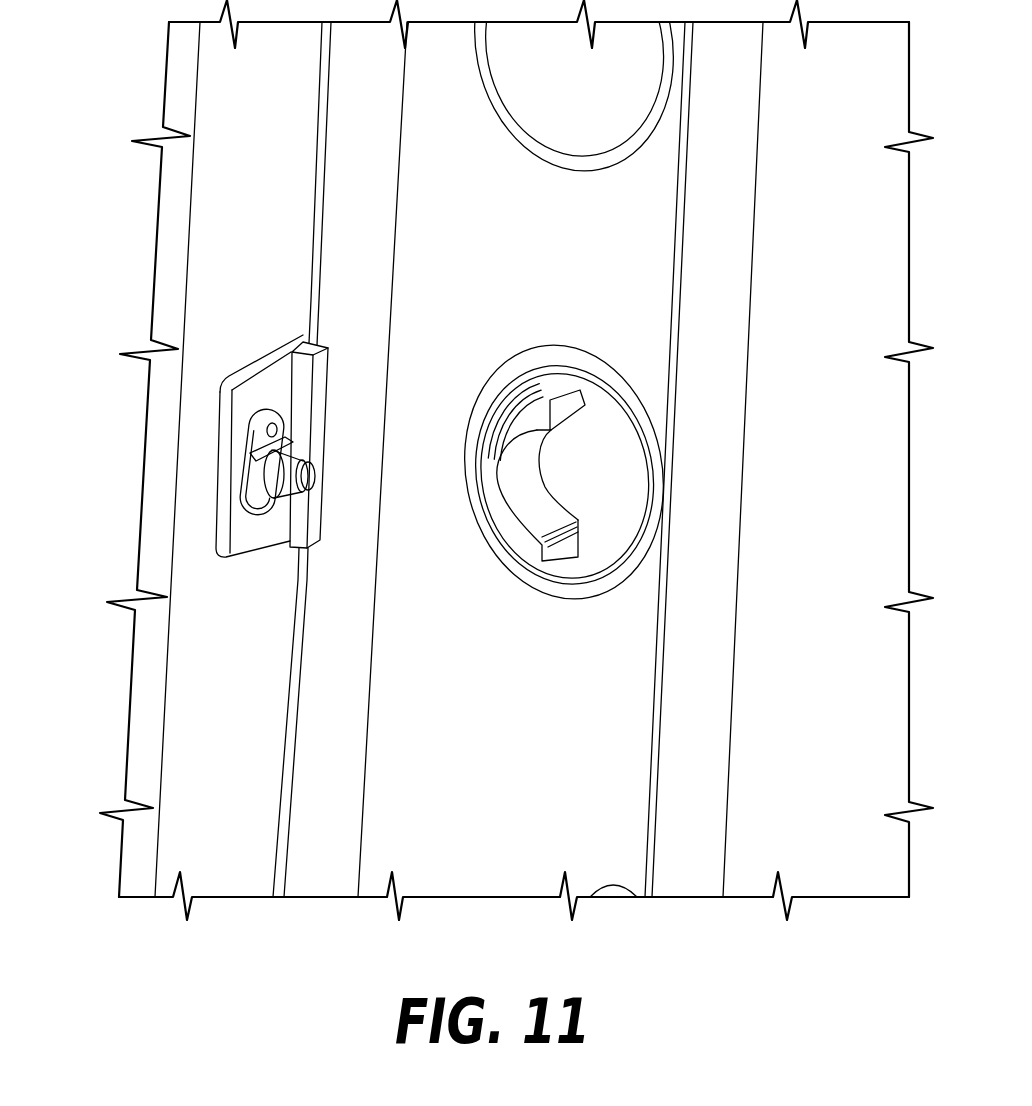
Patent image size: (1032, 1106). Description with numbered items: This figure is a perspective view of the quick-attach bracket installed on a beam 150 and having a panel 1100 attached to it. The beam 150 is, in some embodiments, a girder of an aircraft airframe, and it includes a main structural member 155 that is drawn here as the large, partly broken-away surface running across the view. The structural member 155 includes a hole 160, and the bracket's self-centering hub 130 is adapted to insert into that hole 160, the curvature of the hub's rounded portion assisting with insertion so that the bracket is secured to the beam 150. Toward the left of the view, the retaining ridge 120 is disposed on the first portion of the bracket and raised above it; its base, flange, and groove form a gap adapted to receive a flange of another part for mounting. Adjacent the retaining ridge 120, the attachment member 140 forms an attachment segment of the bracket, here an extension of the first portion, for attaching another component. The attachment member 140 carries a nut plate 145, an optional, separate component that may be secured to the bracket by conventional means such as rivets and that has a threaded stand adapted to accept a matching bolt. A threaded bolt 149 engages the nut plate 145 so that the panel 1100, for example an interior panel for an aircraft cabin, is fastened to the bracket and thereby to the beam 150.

The panel 1100 is at (173, 172).
The beam 150 is at (776, 215).
The main structural member 155 is at (615, 654).
The self-centering hub 130 is at (523, 410).
The hole 160 is at (582, 461).
The retaining ridge 120 is at (322, 387).
The attachment member 140 is at (279, 370).
The nut plate 145 is at (278, 532).
The threaded bolt 149 is at (314, 486).